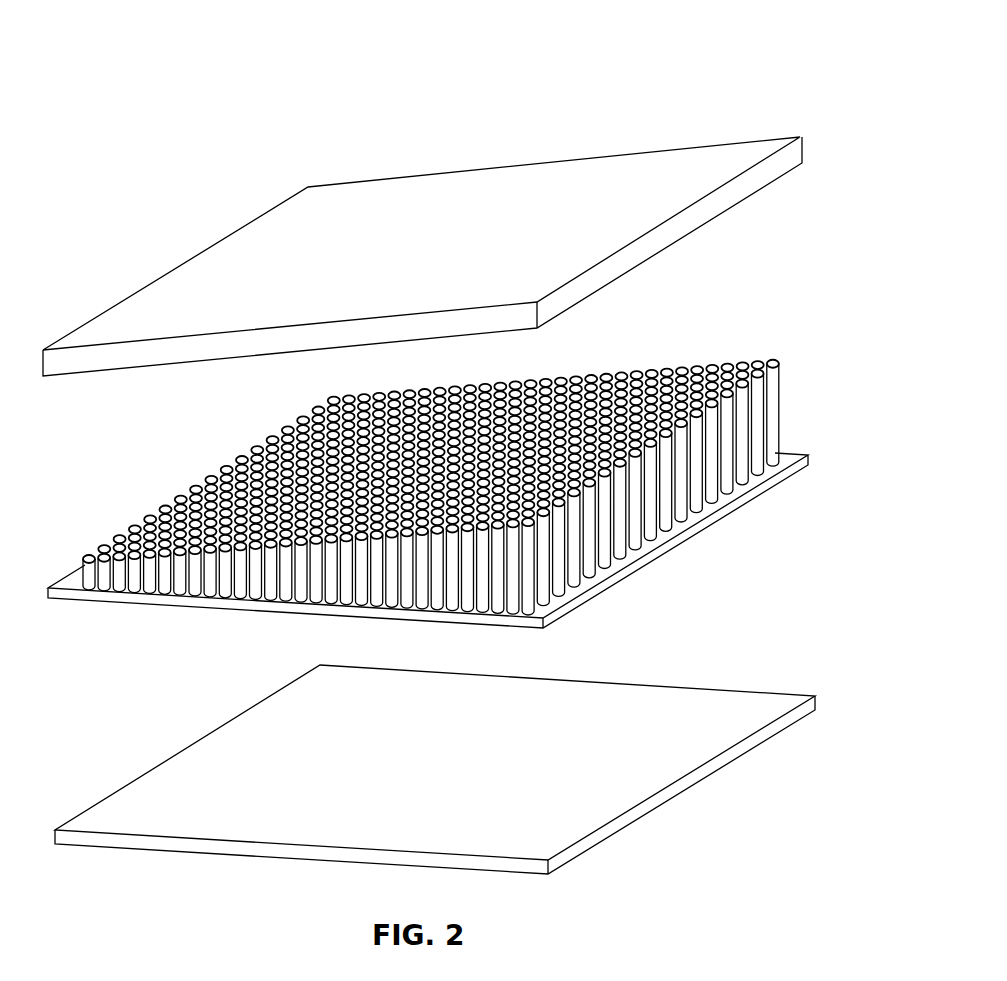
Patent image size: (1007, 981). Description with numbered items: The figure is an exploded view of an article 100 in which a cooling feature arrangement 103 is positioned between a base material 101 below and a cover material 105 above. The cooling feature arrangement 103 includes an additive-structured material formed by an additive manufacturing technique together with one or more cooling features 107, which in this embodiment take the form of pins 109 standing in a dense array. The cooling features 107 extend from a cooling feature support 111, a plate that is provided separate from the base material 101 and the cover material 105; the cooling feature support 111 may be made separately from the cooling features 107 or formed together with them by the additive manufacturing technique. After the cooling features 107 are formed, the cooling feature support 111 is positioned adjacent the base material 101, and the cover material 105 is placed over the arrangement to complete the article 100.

The article 100 is at (232, 143).
The base material 101 is at (737, 700).
The cooling feature arrangement 103 is at (810, 412).
The cover material 105 is at (653, 150).
The cooling features 107 is at (760, 362).
The pins 109 is at (578, 380).
The cooling feature support 111 is at (628, 572).